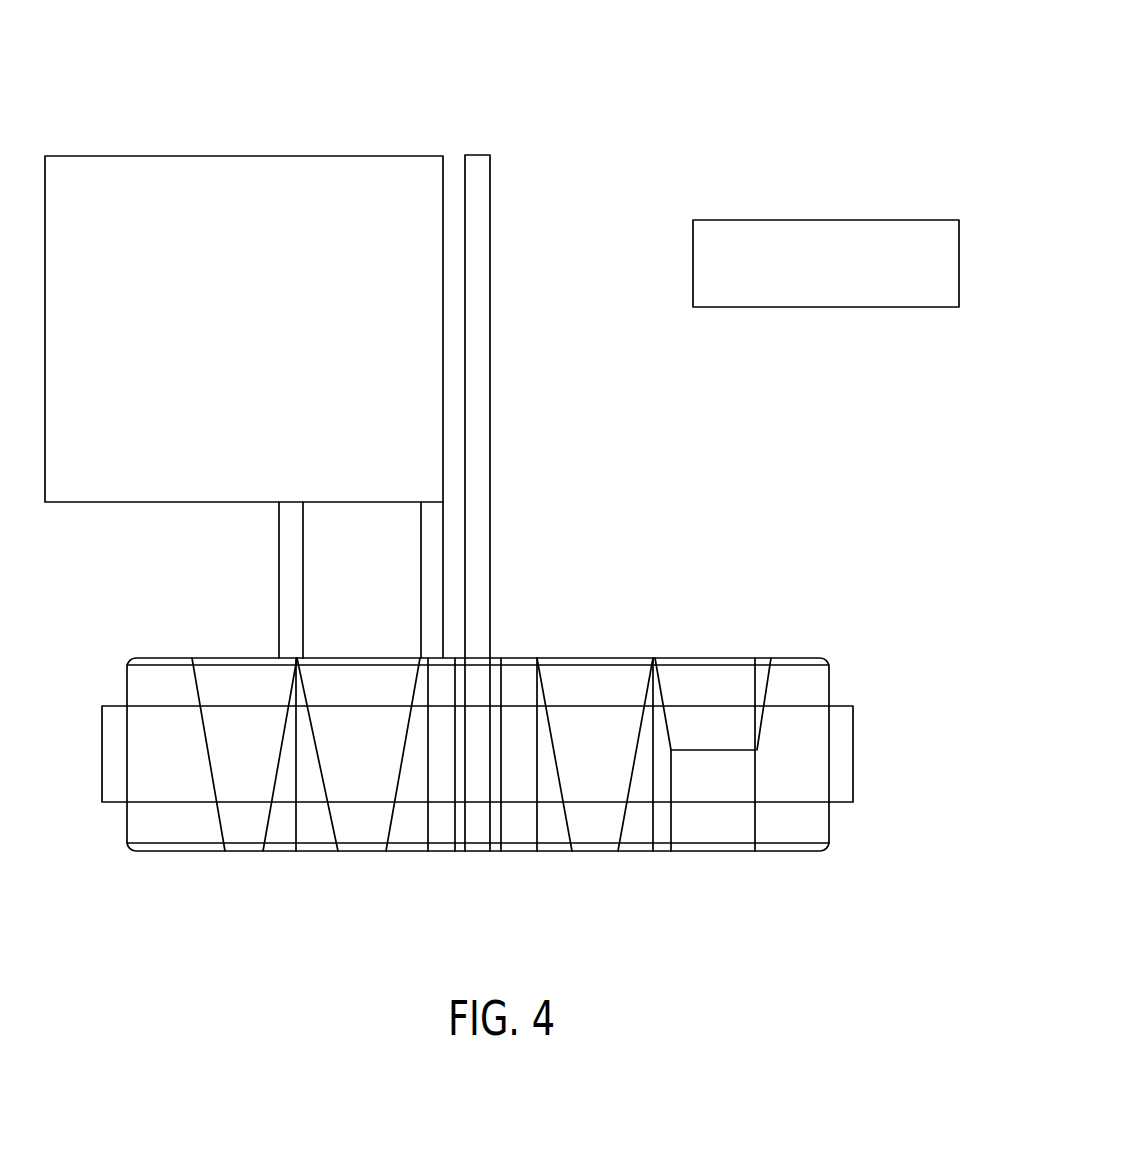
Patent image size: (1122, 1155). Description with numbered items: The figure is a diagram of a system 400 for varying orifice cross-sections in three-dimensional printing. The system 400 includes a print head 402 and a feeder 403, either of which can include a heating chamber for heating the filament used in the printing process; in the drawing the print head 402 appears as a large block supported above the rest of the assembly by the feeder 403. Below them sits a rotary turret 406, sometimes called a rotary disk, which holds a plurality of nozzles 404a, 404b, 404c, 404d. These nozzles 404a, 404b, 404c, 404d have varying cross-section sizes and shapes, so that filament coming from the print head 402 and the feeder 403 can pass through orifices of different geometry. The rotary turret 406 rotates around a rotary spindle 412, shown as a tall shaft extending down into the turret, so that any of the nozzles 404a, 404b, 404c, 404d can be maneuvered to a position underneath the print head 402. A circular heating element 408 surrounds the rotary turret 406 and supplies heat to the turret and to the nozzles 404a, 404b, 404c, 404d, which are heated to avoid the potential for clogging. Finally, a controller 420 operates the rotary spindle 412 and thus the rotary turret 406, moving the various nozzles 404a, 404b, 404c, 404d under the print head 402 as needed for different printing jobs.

The system 400 is at (778, 115).
The print head 402 is at (118, 185).
The feeder 403 is at (290, 583).
The nozzle 404a is at (242, 824).
The nozzle 404b is at (362, 824).
The nozzle 404c is at (599, 824).
The nozzle 404d is at (723, 825).
The rotary turret 406 is at (850, 676).
The circular heating element 408 is at (840, 768).
The rotary spindle 412 is at (475, 193).
The controller 420 is at (739, 235).